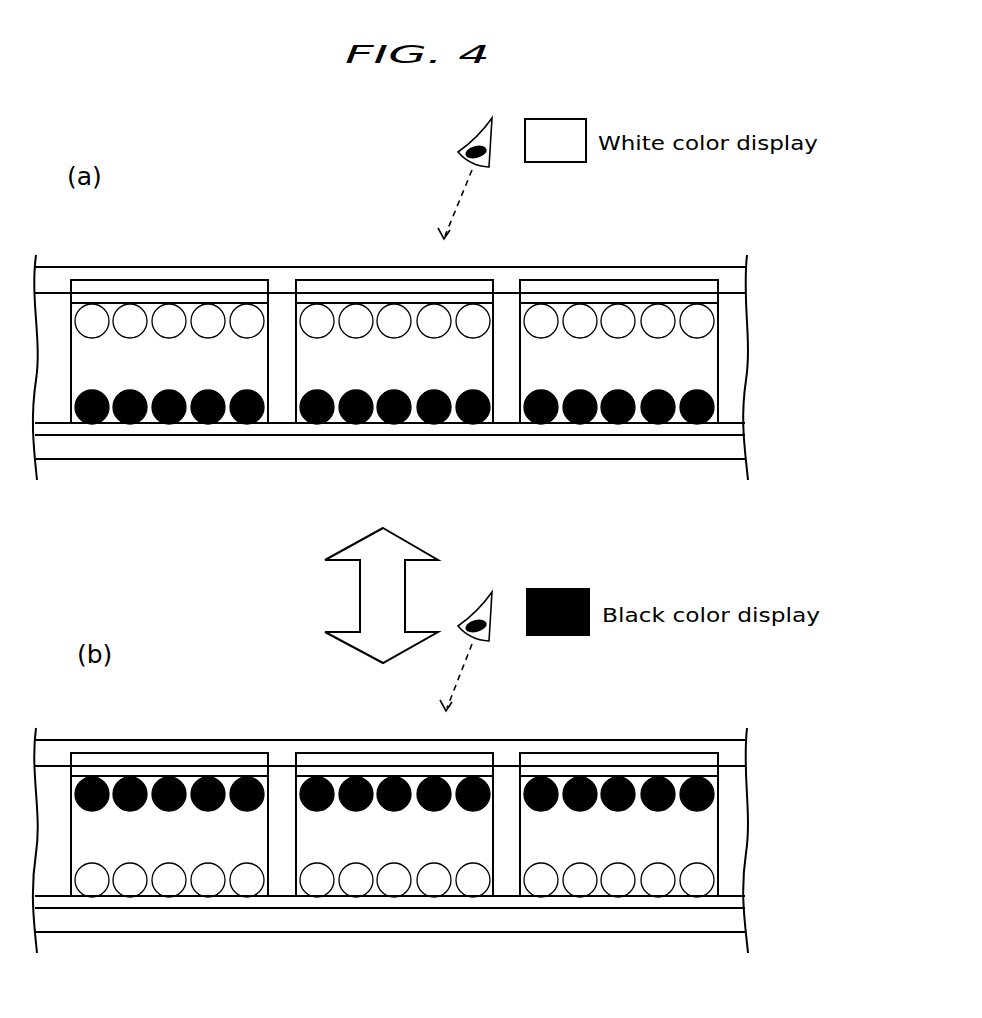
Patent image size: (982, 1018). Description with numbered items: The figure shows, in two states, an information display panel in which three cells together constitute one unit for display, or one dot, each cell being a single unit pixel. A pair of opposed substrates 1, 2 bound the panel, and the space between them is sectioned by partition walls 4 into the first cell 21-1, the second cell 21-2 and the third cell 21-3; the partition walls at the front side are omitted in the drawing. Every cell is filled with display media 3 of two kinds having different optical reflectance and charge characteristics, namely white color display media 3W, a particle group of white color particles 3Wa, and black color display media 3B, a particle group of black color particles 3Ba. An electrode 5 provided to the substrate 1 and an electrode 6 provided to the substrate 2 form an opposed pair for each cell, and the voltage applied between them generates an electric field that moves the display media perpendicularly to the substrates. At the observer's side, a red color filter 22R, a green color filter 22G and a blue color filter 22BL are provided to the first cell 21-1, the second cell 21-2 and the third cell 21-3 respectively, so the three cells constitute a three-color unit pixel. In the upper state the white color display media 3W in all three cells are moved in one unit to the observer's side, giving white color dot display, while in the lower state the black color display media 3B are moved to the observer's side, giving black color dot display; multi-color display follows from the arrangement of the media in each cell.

The substrate 1 is at (250, 450).
The substrate 2 is at (505, 276).
The display media 3 is at (463, 604).
The white color display media 3W is at (443, 604).
The black color display media 3B is at (443, 602).
The white color particle 3Wa is at (660, 304).
The black color particle 3Ba is at (663, 425).
The partition wall 4 is at (52, 410).
The electrode 5 is at (452, 430).
The electrode 6 is at (226, 299).
The first cell 21-1 is at (195, 377).
The second cell 21-2 is at (425, 377).
The third cell 21-3 is at (649, 377).
The red color filter 22R is at (163, 287).
The green color filter 22G is at (375, 287).
The blue color filter 22BL is at (613, 287).